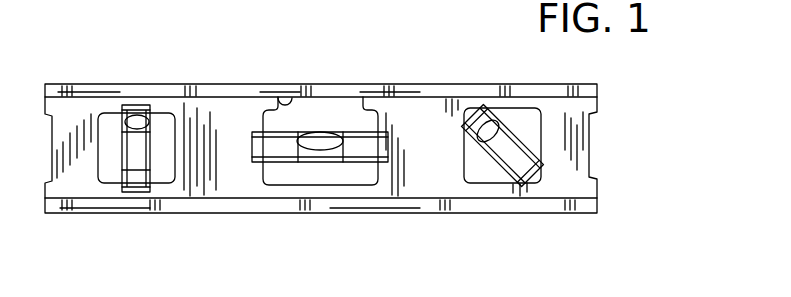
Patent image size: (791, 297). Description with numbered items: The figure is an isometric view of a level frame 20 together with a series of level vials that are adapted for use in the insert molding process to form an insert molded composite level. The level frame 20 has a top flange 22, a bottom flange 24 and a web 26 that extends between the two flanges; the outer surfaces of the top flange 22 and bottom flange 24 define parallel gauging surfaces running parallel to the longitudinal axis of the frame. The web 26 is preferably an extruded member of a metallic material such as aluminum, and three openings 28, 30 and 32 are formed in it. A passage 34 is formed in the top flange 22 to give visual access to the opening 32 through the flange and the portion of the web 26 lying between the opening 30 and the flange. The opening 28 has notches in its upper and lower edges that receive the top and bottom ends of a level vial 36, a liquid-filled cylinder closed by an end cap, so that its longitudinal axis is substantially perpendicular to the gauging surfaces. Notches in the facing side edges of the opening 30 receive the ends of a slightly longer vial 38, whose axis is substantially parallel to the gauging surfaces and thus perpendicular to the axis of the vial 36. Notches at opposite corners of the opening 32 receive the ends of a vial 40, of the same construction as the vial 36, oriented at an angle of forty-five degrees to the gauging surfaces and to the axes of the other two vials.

The level frame 20 is at (623, 103).
The top flange 22 is at (423, 83).
The bottom flange 24 is at (473, 212).
The web 26 is at (560, 155).
The opening 28 is at (165, 118).
The opening 30 is at (353, 120).
The opening 32 is at (522, 118).
The passage 34 is at (298, 100).
The level vial 36 is at (120, 180).
The vial 38 is at (294, 163).
The vial 40 is at (510, 113).